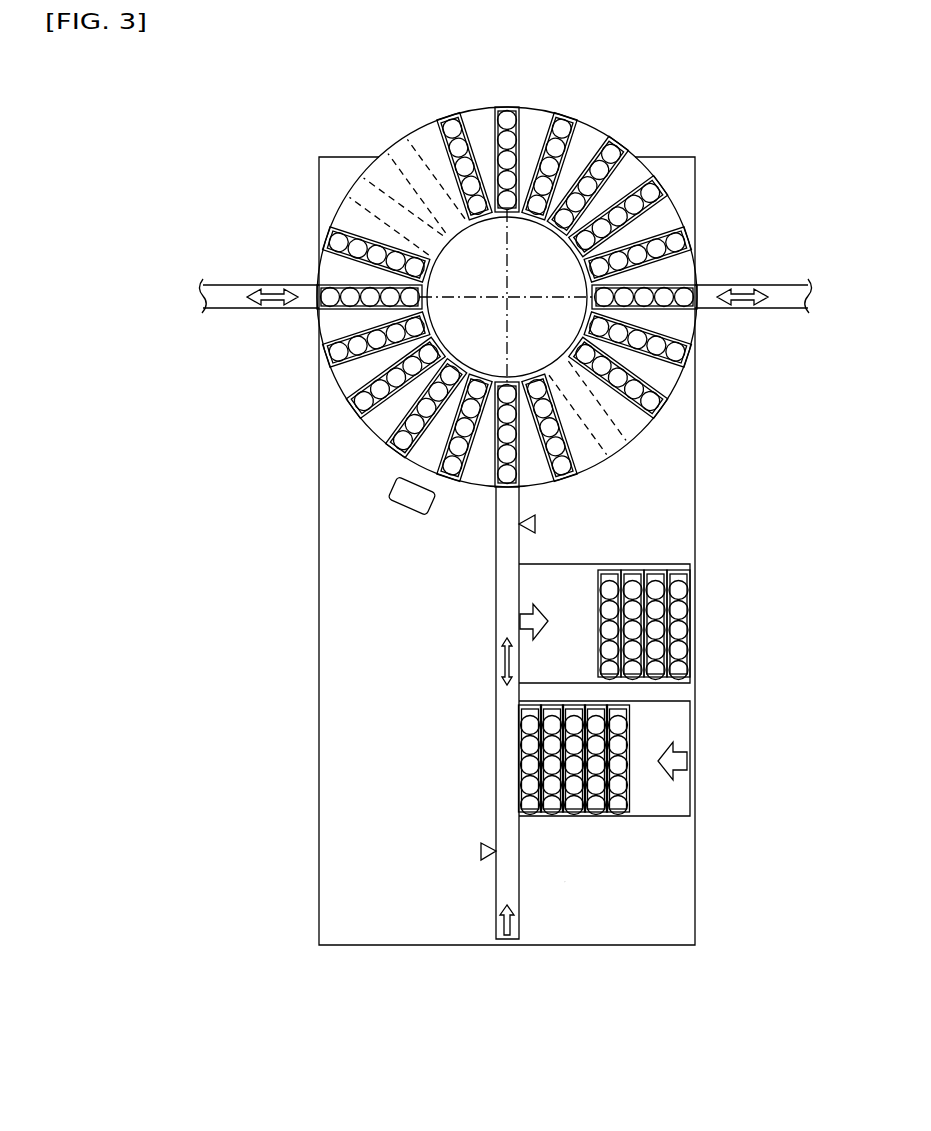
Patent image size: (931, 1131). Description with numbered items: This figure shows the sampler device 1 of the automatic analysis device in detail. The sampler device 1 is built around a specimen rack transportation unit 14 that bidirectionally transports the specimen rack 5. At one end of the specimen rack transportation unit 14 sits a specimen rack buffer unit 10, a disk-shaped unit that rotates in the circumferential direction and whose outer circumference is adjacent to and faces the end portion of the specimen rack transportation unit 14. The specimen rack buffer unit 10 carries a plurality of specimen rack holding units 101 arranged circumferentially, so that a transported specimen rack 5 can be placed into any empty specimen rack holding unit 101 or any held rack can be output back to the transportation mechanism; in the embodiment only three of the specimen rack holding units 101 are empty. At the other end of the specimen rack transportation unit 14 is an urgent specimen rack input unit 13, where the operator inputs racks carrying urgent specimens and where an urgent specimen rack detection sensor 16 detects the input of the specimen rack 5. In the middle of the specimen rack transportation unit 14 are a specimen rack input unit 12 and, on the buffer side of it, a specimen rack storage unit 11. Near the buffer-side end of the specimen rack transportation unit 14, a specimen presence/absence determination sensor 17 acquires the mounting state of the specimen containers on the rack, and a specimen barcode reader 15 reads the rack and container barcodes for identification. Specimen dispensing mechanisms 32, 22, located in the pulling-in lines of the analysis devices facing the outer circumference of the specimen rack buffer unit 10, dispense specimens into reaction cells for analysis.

The sampler device 1 is at (680, 157).
The specimen rack 5 is at (440, 132).
The specimen rack buffer unit 10 is at (501, 456).
The specimen rack holding unit 101 is at (367, 150).
The specimen dispensing mechanism 32 is at (233, 287).
The specimen dispensing mechanism 22 is at (790, 290).
The specimen barcode reader 15 is at (391, 490).
The specimen rack transportation unit 14 is at (498, 748).
The specimen presence/absence determination sensor 17 is at (535, 523).
The specimen rack storage unit 11 is at (705, 628).
The specimen rack input unit 12 is at (705, 762).
The urgent specimen rack detection sensor 16 is at (481, 851).
The urgent specimen rack input unit 13 is at (527, 925).